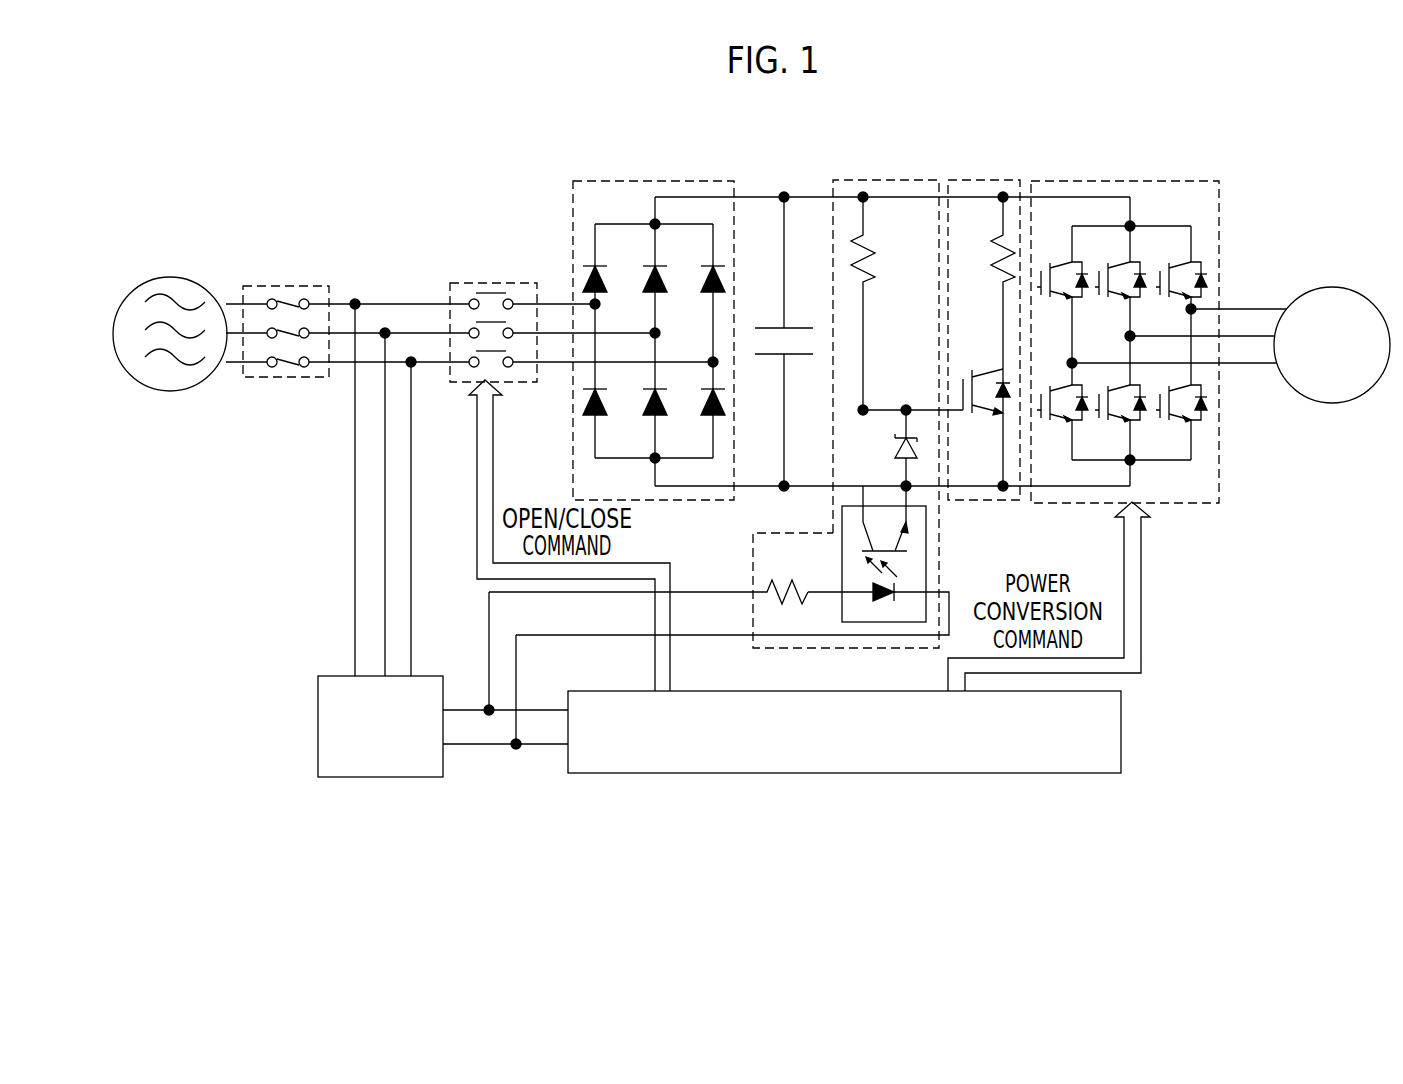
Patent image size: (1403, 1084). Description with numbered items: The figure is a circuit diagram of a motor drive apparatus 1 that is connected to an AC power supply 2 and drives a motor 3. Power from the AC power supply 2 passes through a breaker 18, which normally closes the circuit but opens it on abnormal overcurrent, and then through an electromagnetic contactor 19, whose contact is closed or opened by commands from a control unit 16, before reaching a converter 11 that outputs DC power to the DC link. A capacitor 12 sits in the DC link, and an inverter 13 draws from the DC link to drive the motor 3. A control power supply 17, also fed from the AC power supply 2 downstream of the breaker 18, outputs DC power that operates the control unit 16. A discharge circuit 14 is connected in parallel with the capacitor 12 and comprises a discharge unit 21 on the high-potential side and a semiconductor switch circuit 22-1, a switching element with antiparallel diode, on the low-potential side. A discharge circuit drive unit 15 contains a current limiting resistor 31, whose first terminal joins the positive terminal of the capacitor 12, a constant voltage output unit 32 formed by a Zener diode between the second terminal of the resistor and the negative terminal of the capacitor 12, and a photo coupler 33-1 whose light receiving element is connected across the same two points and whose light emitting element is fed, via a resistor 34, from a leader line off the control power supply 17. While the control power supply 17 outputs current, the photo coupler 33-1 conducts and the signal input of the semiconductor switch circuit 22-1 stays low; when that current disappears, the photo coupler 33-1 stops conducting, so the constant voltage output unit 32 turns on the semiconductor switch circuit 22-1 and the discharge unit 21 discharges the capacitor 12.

The motor drive apparatus 1 is at (684, 845).
The AC power supply 2 is at (170, 278).
The motor 3 is at (1330, 290).
The converter 11 is at (620, 180).
The capacitor 12 is at (790, 327).
The inverter 13 is at (1098, 181).
The discharge circuit 14 is at (992, 312).
The discharge circuit drive unit 15 is at (768, 384).
The control unit 16 is at (893, 773).
The control power supply 17 is at (372, 777).
The breaker 18 is at (277, 284).
The electromagnetic contactor 19 is at (487, 283).
The discharge unit 21 is at (1000, 239).
The semiconductor switch circuit 22-1 is at (987, 368).
The current limiting resistor 31 is at (866, 238).
The constant voltage output unit 32 is at (896, 447).
The photo coupler 33-1 is at (926, 560).
The resistor 34 is at (768, 580).